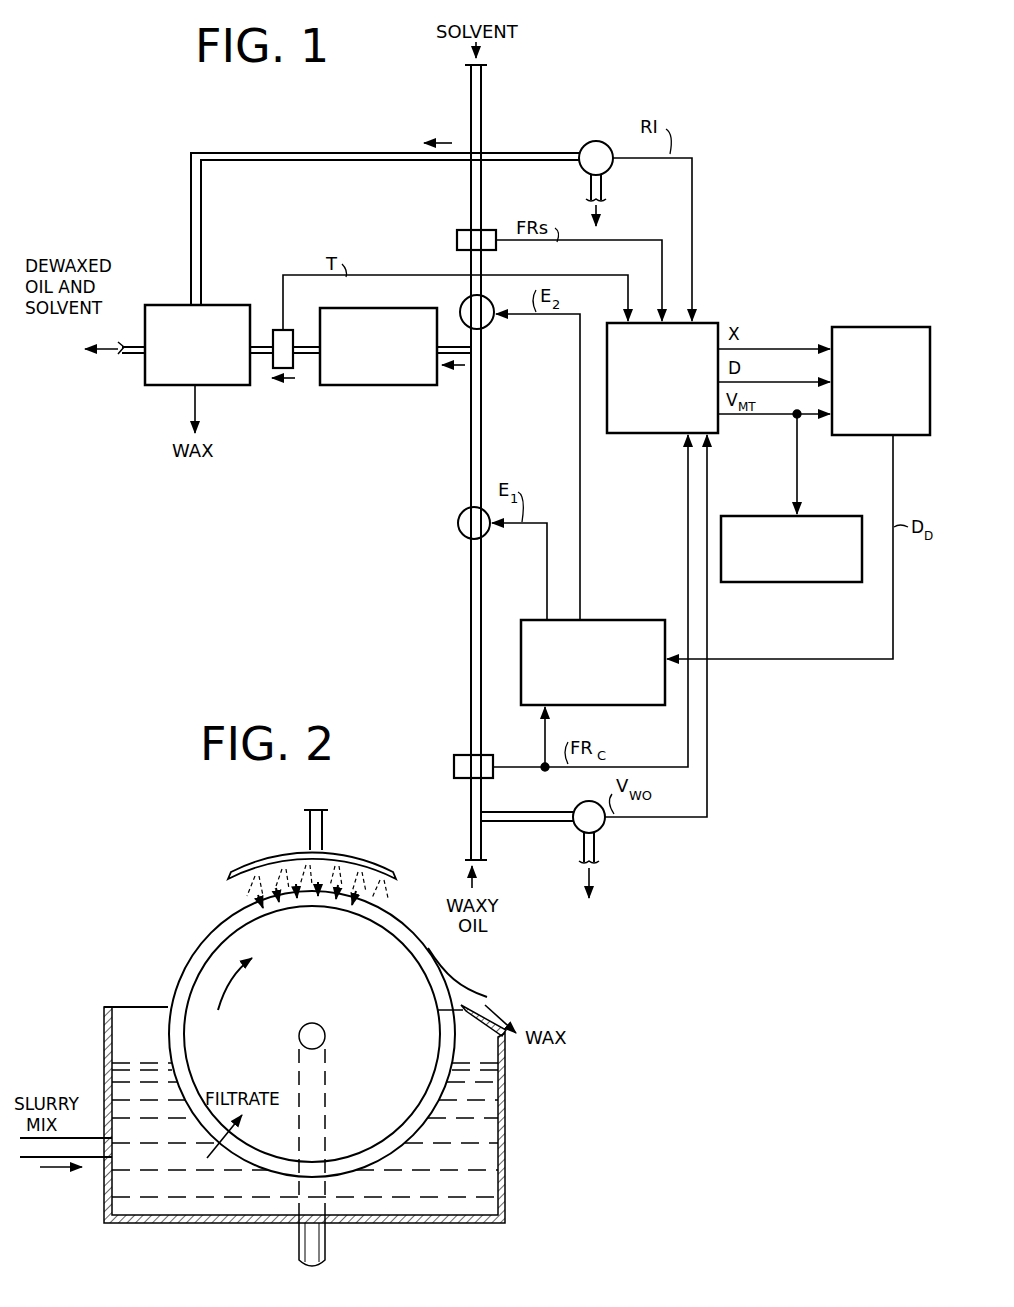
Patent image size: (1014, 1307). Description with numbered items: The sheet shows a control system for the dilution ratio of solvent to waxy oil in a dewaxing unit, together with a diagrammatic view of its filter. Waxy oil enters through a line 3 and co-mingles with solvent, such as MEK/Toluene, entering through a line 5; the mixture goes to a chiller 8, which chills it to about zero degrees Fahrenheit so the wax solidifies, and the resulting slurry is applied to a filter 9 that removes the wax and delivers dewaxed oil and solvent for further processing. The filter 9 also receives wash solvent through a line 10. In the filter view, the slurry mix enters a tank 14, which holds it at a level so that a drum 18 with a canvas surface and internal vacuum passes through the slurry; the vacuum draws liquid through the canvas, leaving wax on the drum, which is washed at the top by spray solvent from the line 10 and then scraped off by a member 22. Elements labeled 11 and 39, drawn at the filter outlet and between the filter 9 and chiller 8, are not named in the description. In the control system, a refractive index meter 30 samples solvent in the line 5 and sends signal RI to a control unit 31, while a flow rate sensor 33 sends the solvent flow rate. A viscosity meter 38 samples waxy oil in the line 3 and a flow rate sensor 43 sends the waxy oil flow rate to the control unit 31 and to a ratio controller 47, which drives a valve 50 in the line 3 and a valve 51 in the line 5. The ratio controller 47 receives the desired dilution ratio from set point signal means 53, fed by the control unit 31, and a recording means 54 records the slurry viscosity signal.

In FIG. 1, the line 3 is at (466, 800).
In FIG. 1, the line 5 is at (482, 92).
In FIG. 1, the chiller 8 is at (371, 375).
In FIG. 1, the filter 9 is at (190, 374).
In FIG. 2, the filter 9 is at (125, 909).
In FIG. 1, the line 10 is at (190, 230).
In FIG. 2, the line 10 is at (310, 825).
In FIG. 1, the dewaxed oil and solvent outlet line 11 is at (124, 358).
In FIG. 2, the tank 14 is at (413, 1223).
In FIG. 2, the drum 18 is at (388, 1050).
In FIG. 2, the member 22 is at (497, 1070).
In FIG. 1, the refractive index meter 30 is at (596, 140).
In FIG. 1, the control unit 31 is at (651, 409).
In FIG. 1, the flow rate sensor 33 is at (457, 240).
In FIG. 1, the viscosity meter 38 is at (574, 804).
In FIG. 1, the temperature sensor 39 is at (293, 368).
In FIG. 1, the flow rate sensor 43 is at (454, 765).
In FIG. 1, the ratio controller 47 is at (582, 701).
In FIG. 1, the valve 50 is at (458, 524).
In FIG. 1, the valve 51 is at (462, 306).
In FIG. 1, the set point signal means 53 is at (880, 327).
In FIG. 1, the recording means 54 is at (782, 582).